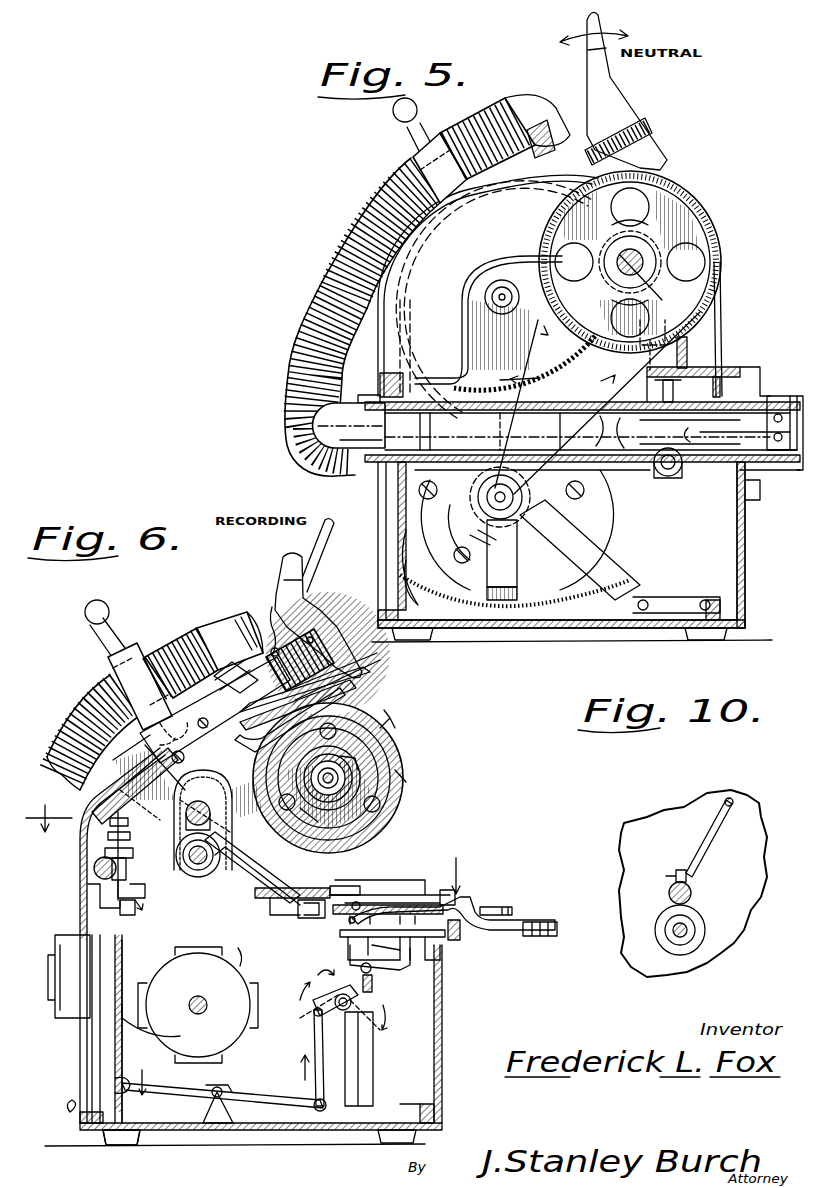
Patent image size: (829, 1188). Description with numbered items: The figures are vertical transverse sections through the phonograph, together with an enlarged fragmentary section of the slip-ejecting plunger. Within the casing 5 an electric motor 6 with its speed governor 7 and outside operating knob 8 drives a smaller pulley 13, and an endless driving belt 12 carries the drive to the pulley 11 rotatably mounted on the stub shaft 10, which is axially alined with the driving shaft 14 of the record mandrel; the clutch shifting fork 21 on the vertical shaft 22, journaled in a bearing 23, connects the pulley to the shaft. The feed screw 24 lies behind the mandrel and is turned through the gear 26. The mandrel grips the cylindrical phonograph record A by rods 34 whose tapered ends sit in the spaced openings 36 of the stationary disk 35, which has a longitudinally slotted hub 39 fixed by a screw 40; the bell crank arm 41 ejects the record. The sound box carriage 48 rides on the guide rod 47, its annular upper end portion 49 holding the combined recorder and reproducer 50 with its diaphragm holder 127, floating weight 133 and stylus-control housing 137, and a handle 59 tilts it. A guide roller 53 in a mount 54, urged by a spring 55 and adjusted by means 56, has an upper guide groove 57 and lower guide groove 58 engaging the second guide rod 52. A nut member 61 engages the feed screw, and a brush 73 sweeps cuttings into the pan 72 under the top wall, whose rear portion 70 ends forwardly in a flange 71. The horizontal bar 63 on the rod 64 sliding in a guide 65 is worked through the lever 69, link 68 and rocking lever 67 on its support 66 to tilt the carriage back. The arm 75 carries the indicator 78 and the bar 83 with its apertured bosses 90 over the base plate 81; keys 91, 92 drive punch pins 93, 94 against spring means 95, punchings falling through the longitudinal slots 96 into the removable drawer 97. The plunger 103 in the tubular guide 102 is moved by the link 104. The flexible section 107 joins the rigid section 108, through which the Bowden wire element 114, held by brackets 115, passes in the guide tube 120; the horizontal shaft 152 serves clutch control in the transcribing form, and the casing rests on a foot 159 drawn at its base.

In FIG. 5, the casing 5 is at (742, 545).
In FIG. 6, the casing 5 is at (444, 1062).
In FIG. 5, the electric motor 6 is at (600, 533).
In FIG. 6, the speed governor 7 is at (241, 951).
In FIG. 6, the operating knob 8 is at (235, 846).
In FIG. 5, the stub shaft 10 is at (650, 286).
In FIG. 5, the pulley 11 is at (680, 220).
In FIG. 5, the endless driving belt 12 is at (572, 465).
In FIG. 5, the smaller pulley 13 is at (522, 450).
In FIG. 6, the driving shaft 14 is at (360, 735).
In FIG. 5, the clutch shifting fork 21 is at (672, 262).
In FIG. 5, the vertical shaft 22 is at (662, 393).
In FIG. 5, the bearing 23 is at (688, 362).
In FIG. 5, the feed screw 24 is at (487, 298).
In FIG. 6, the feed screw 24 is at (212, 822).
In FIG. 5, the gear 26 is at (524, 363).
In FIG. 6, the rods 34 is at (433, 748).
In FIG. 6, the disk 35 is at (325, 772).
In FIG. 6, the spaced openings 36 is at (306, 818).
In FIG. 6, the longitudinally slotted hub 39 is at (370, 755).
In FIG. 6, the screw 40 is at (385, 720).
In FIG. 6, the arm 41 is at (363, 974).
In FIG. 6, the guide rod 47 is at (200, 880).
In FIG. 6, the sound box carriage 48 is at (124, 786).
In FIG. 6, the annular upper end portion 49 is at (226, 684).
In FIG. 5, the combined recorder and reproducer 50 is at (579, 121).
In FIG. 6, the second guide rod 52 is at (95, 870).
In FIG. 6, the guide roller 53 is at (105, 845).
In FIG. 6, the mount 54 is at (135, 892).
In FIG. 6, the spring 55 is at (147, 767).
In FIG. 6, the adjusting means 56 is at (150, 911).
In FIG. 6, the upper guide groove 57 is at (112, 862).
In FIG. 6, the lower guide groove 58 is at (118, 915).
In FIG. 5, the handle 59 is at (440, 133).
In FIG. 6, the handle 59 is at (120, 635).
In FIG. 6, the nut member 61 is at (196, 778).
In FIG. 6, the horizontal bar 63 is at (92, 895).
In FIG. 6, the rod 64 is at (122, 960).
In FIG. 6, the guide 65 is at (118, 980).
In FIG. 6, the support 66 is at (348, 1060).
In FIG. 6, the rocking lever 67 is at (331, 958).
In FIG. 6, the link 68 is at (318, 1045).
In FIG. 6, the lever 69 is at (246, 1090).
In FIG. 6, the rear portion of top wall 70 is at (237, 796).
In FIG. 6, the flange 71 is at (355, 892).
In FIG. 6, the pan 72 is at (296, 886).
In FIG. 6, the brush 73 is at (215, 705).
In FIG. 6, the arm 75 is at (268, 900).
In FIG. 6, the indicator 78 is at (445, 890).
In FIG. 6, the base plate 81 is at (343, 988).
In FIG. 6, the bar 83 is at (462, 935).
In FIG. 6, the apertured bosses 90 is at (372, 945).
In FIG. 6, the key or lever 91 is at (516, 922).
In FIG. 6, the key or lever 92 is at (490, 906).
In FIG. 6, the punch pin 93 is at (418, 902).
In FIG. 6, the punch pin 94 is at (390, 905).
In FIG. 6, the spring means 95 is at (402, 910).
In FIG. 6, the longitudinal slots 96 is at (404, 962).
In FIG. 6, the removable drawer 97 is at (442, 950).
In FIG. 10, the tubular guide 102 is at (692, 896).
In FIG. 10, the plunger 103 is at (668, 896).
In FIG. 10, the link 104 is at (706, 852).
In FIG. 5, the flexible section 107 is at (300, 378).
In FIG. 6, the flexible section 107 is at (180, 630).
In FIG. 5, the rigid section 108 is at (632, 462).
In FIG. 5, the Bowden wire element 114 is at (778, 455).
In FIG. 5, the brackets or clamps 115 is at (775, 398).
In FIG. 5, the guide tube 120 is at (745, 392).
In FIG. 6, the diaphragm holder 127 is at (287, 587).
In FIG. 6, the floating weight 133 is at (330, 690).
In FIG. 5, the housing 137 is at (620, 112).
In FIG. 6, the housing 137 is at (310, 622).
In FIG. 10, the horizontal shaft 152 is at (688, 932).
In FIG. 6, the foot 159 is at (122, 1146).
In FIG. 6, the cylindrical phonograph record A is at (390, 790).